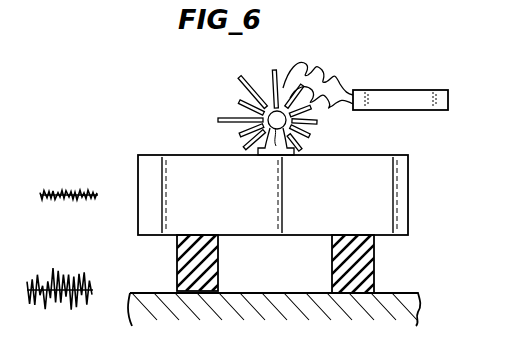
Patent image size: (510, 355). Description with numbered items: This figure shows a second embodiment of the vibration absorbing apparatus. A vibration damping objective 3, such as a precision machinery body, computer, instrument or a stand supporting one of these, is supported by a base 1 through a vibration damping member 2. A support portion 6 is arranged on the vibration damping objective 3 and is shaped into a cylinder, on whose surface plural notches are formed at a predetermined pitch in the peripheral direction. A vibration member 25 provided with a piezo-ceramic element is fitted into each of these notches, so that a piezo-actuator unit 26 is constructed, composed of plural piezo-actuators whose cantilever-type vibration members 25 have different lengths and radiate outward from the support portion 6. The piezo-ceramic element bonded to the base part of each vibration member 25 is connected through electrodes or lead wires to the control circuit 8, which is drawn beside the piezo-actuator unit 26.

The base 1 is at (403, 292).
The vibration damping member 2 is at (332, 263).
The vibration damping objective 3 is at (413, 188).
The support portion 6 is at (267, 157).
The control circuit 8 is at (420, 110).
The vibration member 25 is at (218, 122).
The piezo-actuator unit 26 is at (260, 126).